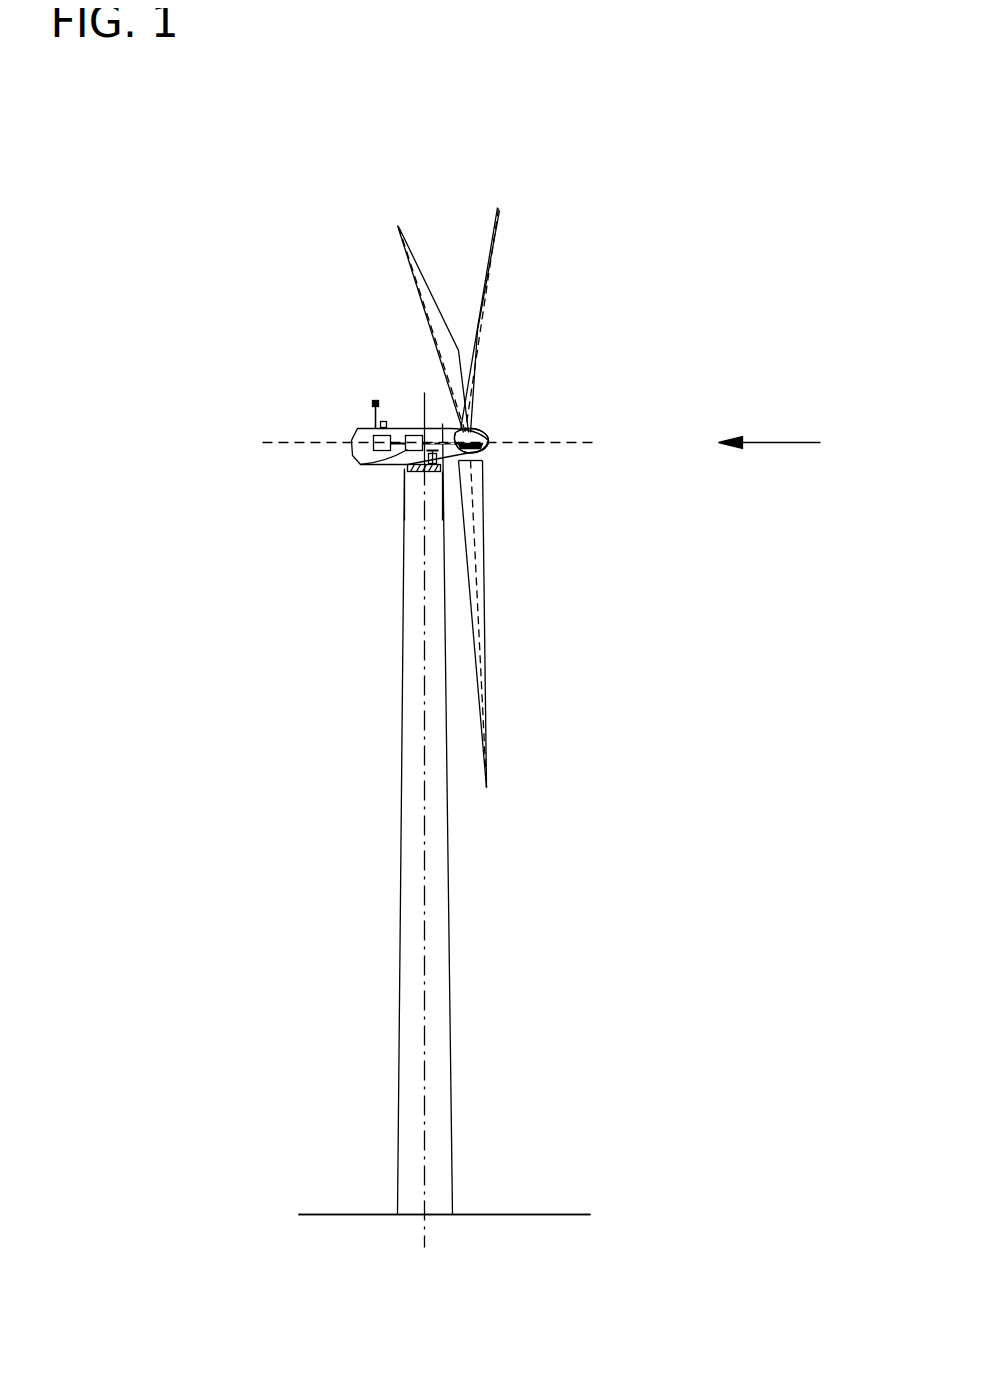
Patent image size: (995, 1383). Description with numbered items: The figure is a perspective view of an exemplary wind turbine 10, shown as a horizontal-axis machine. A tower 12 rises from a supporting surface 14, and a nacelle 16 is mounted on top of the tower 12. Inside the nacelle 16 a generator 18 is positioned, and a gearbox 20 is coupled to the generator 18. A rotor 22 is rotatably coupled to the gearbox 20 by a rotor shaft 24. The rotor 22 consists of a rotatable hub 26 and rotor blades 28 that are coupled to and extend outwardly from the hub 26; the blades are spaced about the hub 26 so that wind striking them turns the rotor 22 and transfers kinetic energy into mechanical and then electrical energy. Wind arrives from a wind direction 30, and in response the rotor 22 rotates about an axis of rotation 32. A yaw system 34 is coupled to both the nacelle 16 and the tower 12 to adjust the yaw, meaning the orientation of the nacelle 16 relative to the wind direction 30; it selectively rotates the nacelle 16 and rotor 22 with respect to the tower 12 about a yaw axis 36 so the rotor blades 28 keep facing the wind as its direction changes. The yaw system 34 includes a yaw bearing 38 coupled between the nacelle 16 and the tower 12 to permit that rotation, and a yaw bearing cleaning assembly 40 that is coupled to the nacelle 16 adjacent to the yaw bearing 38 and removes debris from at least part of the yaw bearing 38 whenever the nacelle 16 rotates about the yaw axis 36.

The wind turbine 10 is at (190, 240).
The tower 12 is at (400, 990).
The supporting surface 14 is at (355, 1214).
The nacelle 16 is at (400, 428).
The generator 18 is at (372, 430).
The gearbox 20 is at (404, 450).
The rotor 22 is at (504, 387).
The rotor shaft 24 is at (440, 420).
The rotatable hub 26 is at (490, 438).
The rotor blade 28 is at (418, 293).
The wind direction 30 is at (787, 442).
The axis of rotation 32 is at (556, 443).
The yaw system 34 is at (450, 479).
The yaw axis 36 is at (425, 932).
The yaw bearing 38 is at (416, 475).
The yaw bearing cleaning assembly 40 is at (410, 471).